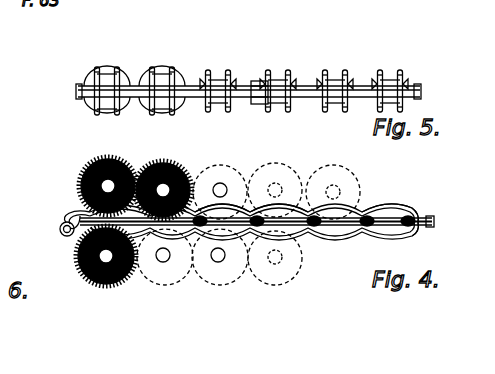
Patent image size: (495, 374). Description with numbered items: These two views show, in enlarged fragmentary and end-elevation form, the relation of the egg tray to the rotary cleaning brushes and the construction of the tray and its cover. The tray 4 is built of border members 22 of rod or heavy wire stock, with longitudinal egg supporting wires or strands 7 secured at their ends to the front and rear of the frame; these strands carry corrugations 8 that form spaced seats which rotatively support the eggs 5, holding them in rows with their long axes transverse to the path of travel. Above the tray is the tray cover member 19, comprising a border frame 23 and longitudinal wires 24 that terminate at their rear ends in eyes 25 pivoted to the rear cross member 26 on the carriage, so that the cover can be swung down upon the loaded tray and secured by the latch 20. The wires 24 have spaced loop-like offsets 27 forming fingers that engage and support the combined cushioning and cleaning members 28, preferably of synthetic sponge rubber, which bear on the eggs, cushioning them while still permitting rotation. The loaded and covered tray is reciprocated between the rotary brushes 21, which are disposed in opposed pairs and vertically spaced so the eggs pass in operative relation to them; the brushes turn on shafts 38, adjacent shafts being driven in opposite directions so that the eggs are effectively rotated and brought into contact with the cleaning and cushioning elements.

In FIG. 5, the tray 4 is at (194, 103).
In FIG. 4, the tray 4 is at (342, 243).
In FIG. 5, the eggs 5 is at (162, 69).
In FIG. 4, the eggs 5 is at (198, 198).
In FIG. 5, the longitudinal egg supporting wires or strands 7 is at (117, 101).
In FIG. 4, the longitudinal egg supporting wires or strands 7 is at (412, 241).
In FIG. 4, the corrugations 8 is at (331, 244).
In FIG. 5, the tray cover member 19 is at (190, 100).
In FIG. 4, the tray cover member 19 is at (215, 183).
In FIG. 5, the latch 20 is at (254, 100).
In FIG. 4, the latch 20 is at (425, 217).
In FIG. 4, the rotary brushes 21 is at (144, 168).
In FIG. 5, the border members 22 is at (310, 99).
In FIG. 4, the border members 22 is at (281, 236).
In FIG. 5, the border frame 23 is at (358, 92).
In FIG. 4, the border frame 23 is at (382, 220).
In FIG. 5, the longitudinal wires 24 is at (343, 73).
In FIG. 4, the eyes 25 is at (58, 224).
In FIG. 4, the rear cross member 26 is at (62, 237).
In FIG. 4, the loop-like offsets 27 is at (245, 201).
In FIG. 4, the combined cushioning and cleaning members 28 is at (241, 241).
In FIG. 4, the shafts 38 is at (213, 263).